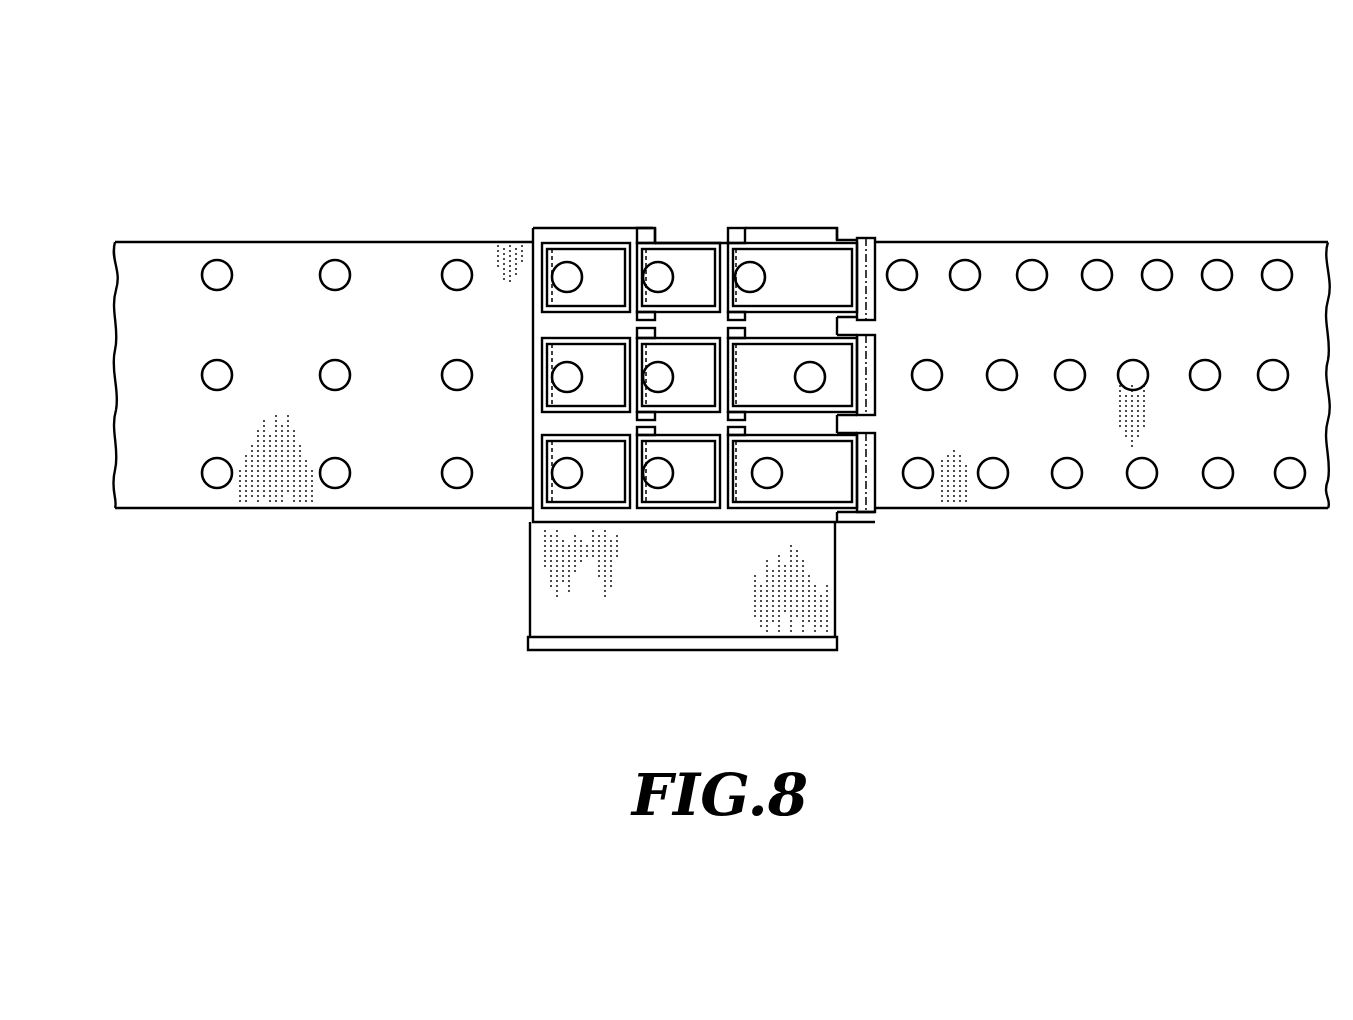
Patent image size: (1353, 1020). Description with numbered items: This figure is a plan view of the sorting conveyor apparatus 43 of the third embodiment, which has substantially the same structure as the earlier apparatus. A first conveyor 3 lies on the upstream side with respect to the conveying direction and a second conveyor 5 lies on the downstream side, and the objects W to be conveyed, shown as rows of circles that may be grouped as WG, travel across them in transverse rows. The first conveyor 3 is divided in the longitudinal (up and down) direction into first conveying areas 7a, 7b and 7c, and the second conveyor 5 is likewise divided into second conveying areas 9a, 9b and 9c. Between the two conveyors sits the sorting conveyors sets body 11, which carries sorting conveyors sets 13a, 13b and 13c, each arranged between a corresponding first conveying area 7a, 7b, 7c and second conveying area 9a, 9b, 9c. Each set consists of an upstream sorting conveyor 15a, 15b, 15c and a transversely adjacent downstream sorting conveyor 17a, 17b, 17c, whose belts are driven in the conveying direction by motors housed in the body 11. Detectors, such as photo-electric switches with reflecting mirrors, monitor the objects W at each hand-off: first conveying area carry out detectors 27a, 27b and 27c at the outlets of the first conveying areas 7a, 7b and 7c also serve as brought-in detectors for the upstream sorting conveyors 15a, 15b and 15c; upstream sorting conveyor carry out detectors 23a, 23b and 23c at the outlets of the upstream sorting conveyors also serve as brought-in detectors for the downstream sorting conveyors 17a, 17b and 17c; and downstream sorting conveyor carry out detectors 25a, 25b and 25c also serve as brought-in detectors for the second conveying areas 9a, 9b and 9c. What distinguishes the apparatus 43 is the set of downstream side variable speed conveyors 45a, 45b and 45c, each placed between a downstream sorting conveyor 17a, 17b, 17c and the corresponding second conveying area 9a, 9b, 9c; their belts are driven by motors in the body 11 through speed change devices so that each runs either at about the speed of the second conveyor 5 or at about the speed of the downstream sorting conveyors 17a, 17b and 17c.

The first conveyor 3 is at (1140, 215).
The second conveyor 5 is at (352, 145).
The first conveying area 7a is at (1185, 270).
The first conveying area 7b is at (1228, 372).
The first conveying area 7c is at (1235, 470).
The second conveying area 9a is at (319, 255).
The second conveying area 9b is at (318, 357).
The second conveying area 9c is at (325, 448).
The sorting conveyors sets body 11 is at (835, 593).
The sorting conveyors set 13a is at (826, 205).
The sorting conveyors set 13b is at (880, 368).
The sorting conveyors set 13c is at (850, 525).
The upstream sorting conveyor 15a is at (842, 294).
The upstream sorting conveyor 15b is at (738, 398).
The upstream sorting conveyor 15c is at (785, 492).
The downstream sorting conveyor 17a is at (688, 275).
The downstream sorting conveyor 17b is at (693, 378).
The downstream sorting conveyor 17c is at (680, 483).
The upstream sorting conveyor carry out detector 23a is at (735, 235).
The upstream sorting conveyor carry out detector 23b is at (845, 328).
The upstream sorting conveyor carry out detector 23c is at (845, 430).
The downstream sorting conveyor carry out detector 25a is at (648, 235).
The downstream sorting conveyor carry out detector 25b is at (637, 332).
The downstream sorting conveyor carry out detector 25c is at (637, 432).
The first conveying area carry out detector 27a is at (870, 240).
The first conveying area carry out detector 27b is at (878, 340).
The first conveying area carry out detector 27c is at (878, 440).
The sorting conveyor apparatus 43 is at (790, 150).
The downstream side variable speed conveyor 45a is at (585, 252).
The downstream side variable speed conveyor 45b is at (610, 388).
The downstream side variable speed conveyor 45c is at (598, 485).
The object to be conveyed W is at (218, 362).
The wire group WG is at (226, 243).